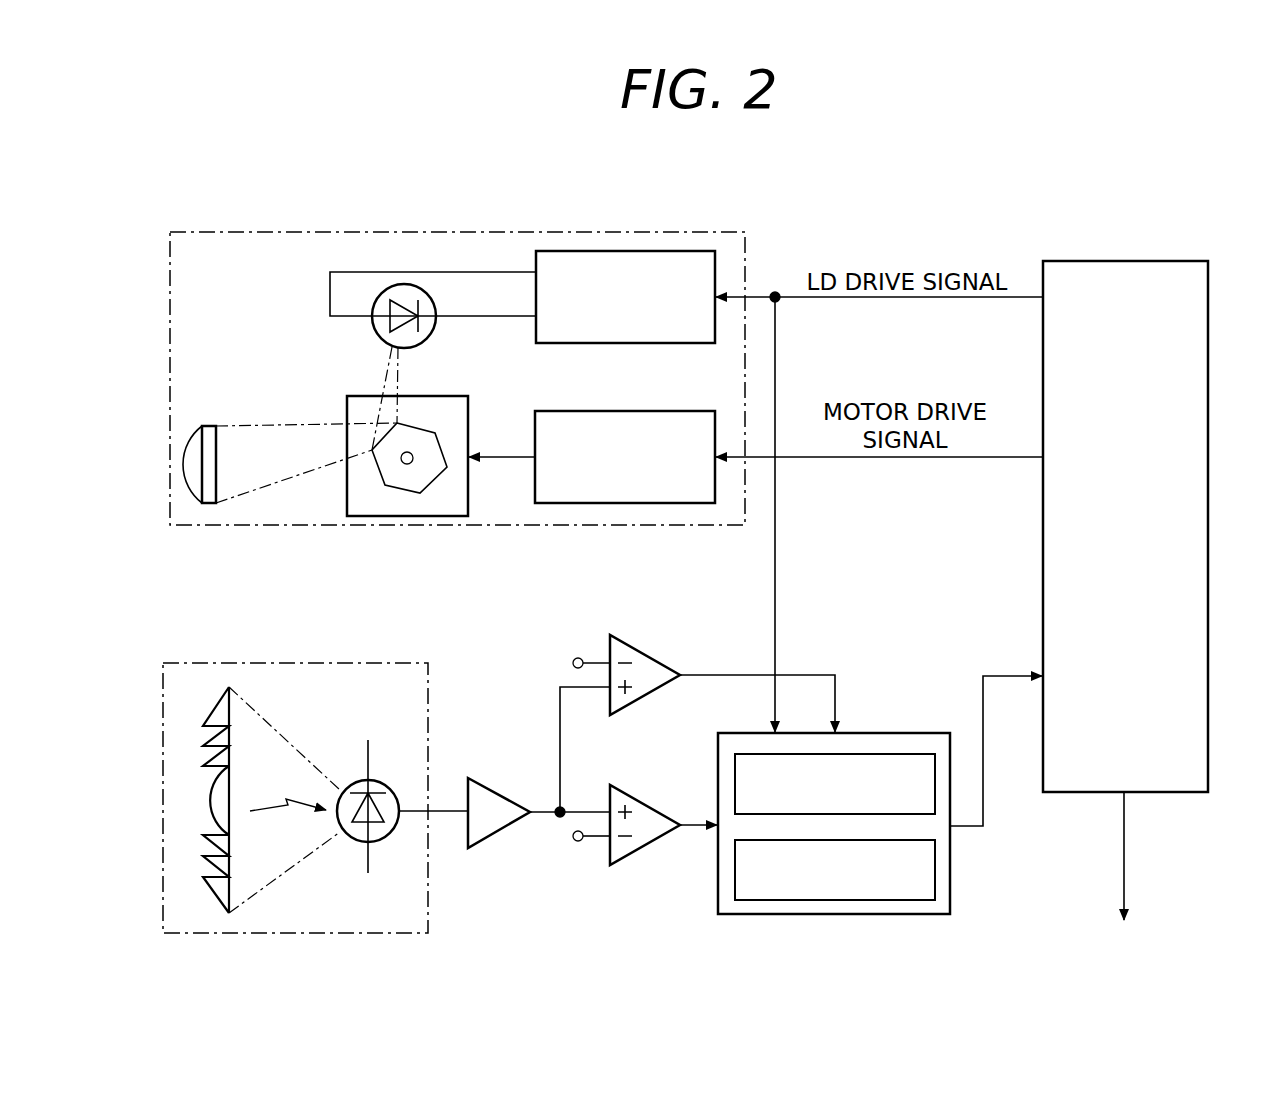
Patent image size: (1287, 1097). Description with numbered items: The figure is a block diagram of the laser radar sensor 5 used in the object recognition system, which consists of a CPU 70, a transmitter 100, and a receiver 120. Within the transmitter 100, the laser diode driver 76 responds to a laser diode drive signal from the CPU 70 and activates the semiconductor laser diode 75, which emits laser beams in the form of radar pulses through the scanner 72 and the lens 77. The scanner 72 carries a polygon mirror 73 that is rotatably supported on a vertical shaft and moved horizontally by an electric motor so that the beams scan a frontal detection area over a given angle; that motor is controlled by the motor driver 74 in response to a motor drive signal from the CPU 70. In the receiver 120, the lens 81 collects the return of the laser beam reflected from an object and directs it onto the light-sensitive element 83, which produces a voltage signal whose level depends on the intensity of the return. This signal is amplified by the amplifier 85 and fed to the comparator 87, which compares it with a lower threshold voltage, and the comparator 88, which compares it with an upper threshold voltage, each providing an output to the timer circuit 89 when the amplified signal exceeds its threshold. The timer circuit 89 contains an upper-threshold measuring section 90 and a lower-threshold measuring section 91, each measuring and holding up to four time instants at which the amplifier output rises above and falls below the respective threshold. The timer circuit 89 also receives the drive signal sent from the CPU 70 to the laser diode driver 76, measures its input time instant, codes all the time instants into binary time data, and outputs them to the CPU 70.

The laser radar sensor 5 is at (1060, 225).
The CPU 70 is at (1210, 320).
The scanner 72 is at (388, 518).
The polygon mirror 73 is at (420, 470).
The motor driver 74 is at (672, 411).
The semiconductor laser diode 75 is at (436, 330).
The laser diode driver 76 is at (560, 251).
The lens 77 is at (190, 440).
The lens 81 is at (218, 712).
The light-sensitive element 83 is at (385, 782).
The amplifier 85 is at (490, 782).
The comparator 87 is at (645, 795).
The comparator 88 is at (645, 648).
The timer circuit 89 is at (895, 733).
The V1 measuring section 90 is at (935, 778).
The V0 measuring section 91 is at (935, 890).
The transmitter 100 is at (665, 232).
The receiver 120 is at (378, 663).